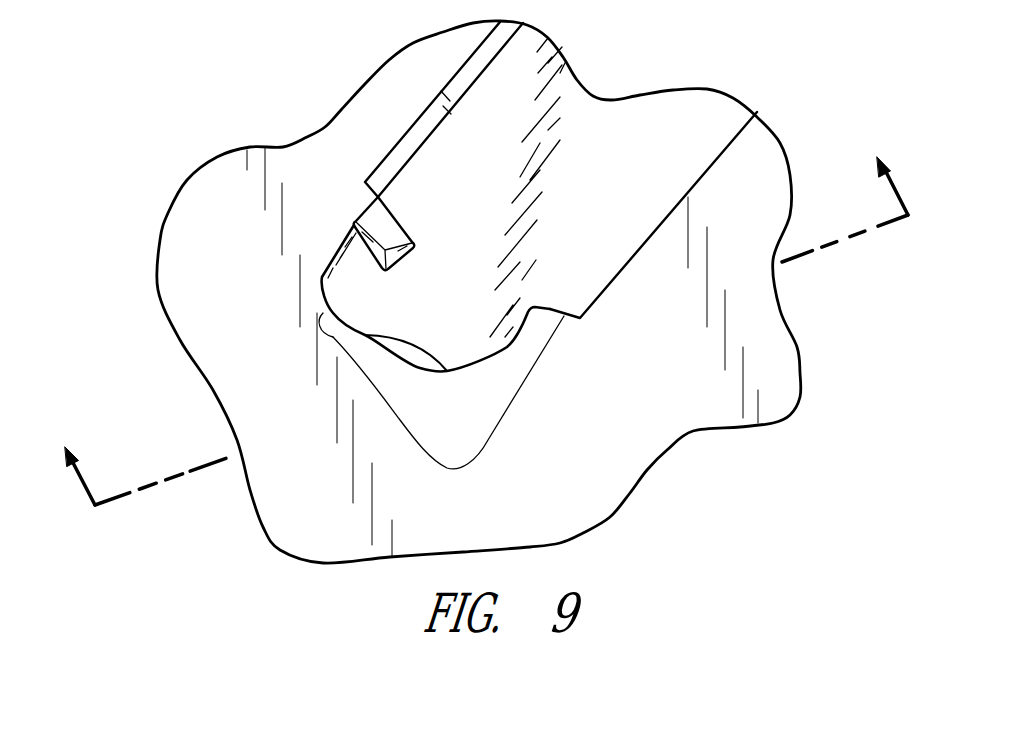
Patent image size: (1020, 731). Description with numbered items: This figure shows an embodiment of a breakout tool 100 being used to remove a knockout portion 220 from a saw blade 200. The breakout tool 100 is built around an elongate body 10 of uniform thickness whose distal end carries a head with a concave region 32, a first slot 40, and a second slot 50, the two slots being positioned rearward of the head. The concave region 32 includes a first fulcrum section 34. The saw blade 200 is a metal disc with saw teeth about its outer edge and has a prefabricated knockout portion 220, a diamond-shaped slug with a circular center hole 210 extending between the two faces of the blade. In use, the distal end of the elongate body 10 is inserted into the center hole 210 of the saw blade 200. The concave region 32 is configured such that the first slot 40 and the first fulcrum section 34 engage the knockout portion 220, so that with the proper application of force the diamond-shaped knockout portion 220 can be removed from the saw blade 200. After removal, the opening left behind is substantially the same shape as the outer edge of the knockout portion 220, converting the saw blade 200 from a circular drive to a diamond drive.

The breakout tool 100 is at (642, 137).
The saw blade 200 is at (767, 353).
The second slot 50 is at (378, 230).
The first fulcrum section 34 is at (333, 312).
The center hole 210 is at (399, 341).
The concave region 32 is at (418, 345).
The first slot 40 is at (542, 317).
The knockout portion 220 is at (458, 397).
The elongate body 10 is at (486, 331).